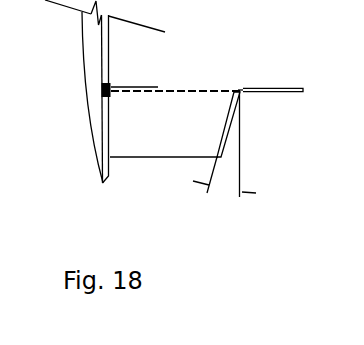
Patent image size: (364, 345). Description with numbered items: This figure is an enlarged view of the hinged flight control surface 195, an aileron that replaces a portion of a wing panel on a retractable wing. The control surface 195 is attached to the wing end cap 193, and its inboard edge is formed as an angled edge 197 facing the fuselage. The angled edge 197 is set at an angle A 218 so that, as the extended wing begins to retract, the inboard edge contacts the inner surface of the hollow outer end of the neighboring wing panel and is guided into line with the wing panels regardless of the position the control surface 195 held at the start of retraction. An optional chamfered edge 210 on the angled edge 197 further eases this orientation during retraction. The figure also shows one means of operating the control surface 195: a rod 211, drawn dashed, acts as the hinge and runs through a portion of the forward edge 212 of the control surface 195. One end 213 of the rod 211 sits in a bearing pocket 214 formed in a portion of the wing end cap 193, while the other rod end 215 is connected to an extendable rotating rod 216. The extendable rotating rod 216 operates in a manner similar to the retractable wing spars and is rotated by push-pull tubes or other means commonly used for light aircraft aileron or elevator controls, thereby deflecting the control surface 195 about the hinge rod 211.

The wing end cap 193 is at (82, 33).
The hinged flight control surface 195 is at (155, 160).
The angled edge 197 is at (233, 110).
The chamfered edge 210 is at (230, 120).
The rod 211 is at (230, 88).
The forward edge 212 is at (163, 89).
The rod end 213 is at (132, 111).
The bearing pocket 214 is at (102, 93).
The other rod end 215 is at (243, 89).
The extendable rotating rod 216 is at (298, 88).
The angle A 218 is at (223, 198).